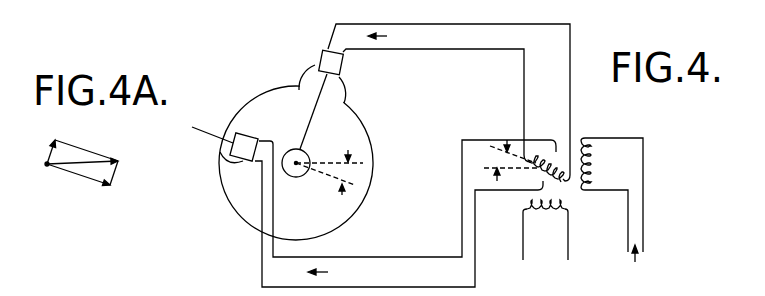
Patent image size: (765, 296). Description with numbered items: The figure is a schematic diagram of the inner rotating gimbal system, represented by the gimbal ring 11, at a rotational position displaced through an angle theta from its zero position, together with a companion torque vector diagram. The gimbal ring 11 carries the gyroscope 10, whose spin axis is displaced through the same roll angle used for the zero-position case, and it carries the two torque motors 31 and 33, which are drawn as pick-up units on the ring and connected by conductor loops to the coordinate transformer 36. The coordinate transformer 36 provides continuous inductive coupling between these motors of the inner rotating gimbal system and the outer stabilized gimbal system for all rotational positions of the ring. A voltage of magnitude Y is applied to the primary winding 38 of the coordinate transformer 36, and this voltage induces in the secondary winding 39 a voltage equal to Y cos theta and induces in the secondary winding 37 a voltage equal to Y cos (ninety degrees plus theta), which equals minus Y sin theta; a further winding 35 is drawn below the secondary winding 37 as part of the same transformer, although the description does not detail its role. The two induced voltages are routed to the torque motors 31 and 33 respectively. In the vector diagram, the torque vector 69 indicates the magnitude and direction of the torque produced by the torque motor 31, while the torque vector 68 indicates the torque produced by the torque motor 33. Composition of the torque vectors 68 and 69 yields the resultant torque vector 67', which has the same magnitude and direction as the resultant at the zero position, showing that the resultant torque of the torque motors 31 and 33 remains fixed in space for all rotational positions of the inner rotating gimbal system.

In FIG. 4, the gyroscope 10 is at (309, 157).
In FIG. 4, the gimbal ring 11 is at (359, 119).
In FIG. 4, the torque motor 31 is at (322, 56).
In FIG. 4, the torque motor 33 is at (250, 142).
In FIG. 4, the winding 35 is at (540, 214).
In FIG. 4, the coordinate transformer 36 is at (577, 136).
In FIG. 4, the secondary winding 37 is at (552, 173).
In FIG. 4, the primary winding 38 is at (592, 158).
In FIG. 4, the secondary winding 39 is at (553, 150).
In FIG. 4A, the resultant torque vector 67' is at (84, 147).
In FIG. 4A, the torque vector 68 is at (83, 177).
In FIG. 4A, the torque vector 69 is at (46, 160).